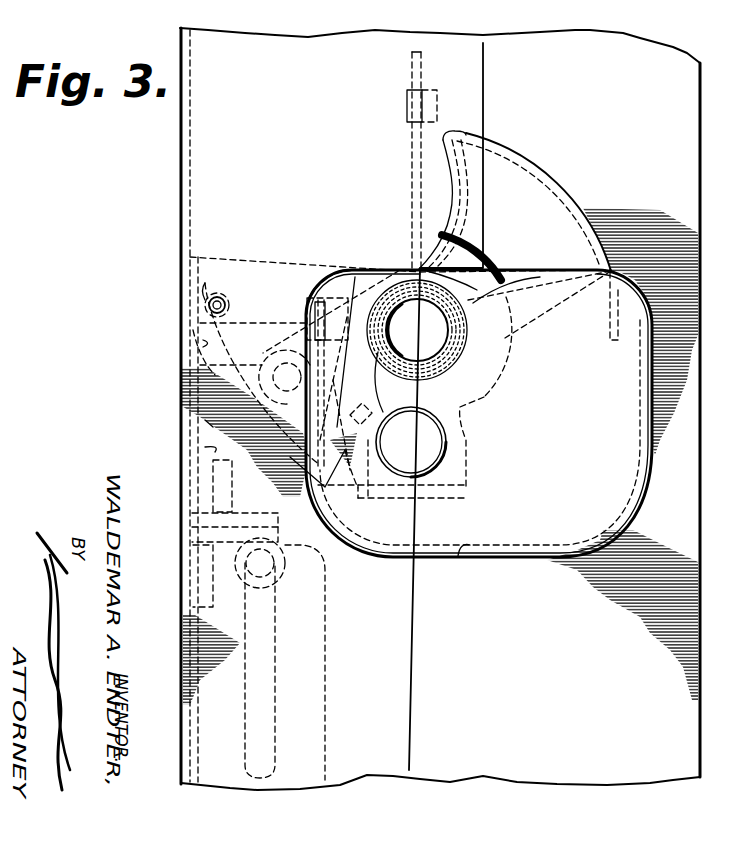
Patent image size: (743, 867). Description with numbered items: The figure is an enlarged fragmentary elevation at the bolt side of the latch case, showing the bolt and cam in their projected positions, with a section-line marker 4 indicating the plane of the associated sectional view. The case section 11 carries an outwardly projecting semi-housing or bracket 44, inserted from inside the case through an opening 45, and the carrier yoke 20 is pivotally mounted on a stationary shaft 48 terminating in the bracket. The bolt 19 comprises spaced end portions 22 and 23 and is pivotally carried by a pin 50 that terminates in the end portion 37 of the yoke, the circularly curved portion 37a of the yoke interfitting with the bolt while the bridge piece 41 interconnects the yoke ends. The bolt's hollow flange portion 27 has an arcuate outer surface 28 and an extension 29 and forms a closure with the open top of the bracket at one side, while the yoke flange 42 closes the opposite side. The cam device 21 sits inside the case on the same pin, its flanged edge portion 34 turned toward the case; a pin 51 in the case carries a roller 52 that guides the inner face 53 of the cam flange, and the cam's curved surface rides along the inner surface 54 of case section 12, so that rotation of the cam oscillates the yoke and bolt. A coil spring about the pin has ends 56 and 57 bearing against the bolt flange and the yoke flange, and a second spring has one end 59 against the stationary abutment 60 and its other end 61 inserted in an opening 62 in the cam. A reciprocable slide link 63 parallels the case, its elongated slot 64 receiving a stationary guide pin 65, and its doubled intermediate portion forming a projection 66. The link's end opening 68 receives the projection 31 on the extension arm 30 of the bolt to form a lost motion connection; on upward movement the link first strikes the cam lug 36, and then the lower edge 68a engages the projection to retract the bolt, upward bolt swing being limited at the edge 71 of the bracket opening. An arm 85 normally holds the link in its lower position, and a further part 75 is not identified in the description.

The case section 11 is at (694, 162).
The case section 12 is at (184, 128).
The section line 4- 4 is at (492, 62).
The bolt 19 is at (537, 151).
The carrier yoke 20 is at (476, 443).
The cam device 21 is at (236, 250).
The end portion of bolt 22 is at (540, 314).
The end portion of bolt 23 is at (566, 230).
The hollow flange portion 27 is at (548, 177).
The outer surface of flange 28 is at (578, 212).
The extension of flange 29 is at (609, 342).
The extension arm 30 is at (288, 340).
The projection 31 is at (280, 365).
The flanged edge portion of cam 34 is at (200, 368).
The cam lug 36 is at (356, 401).
The end portion of yoke 37 is at (462, 390).
The circularly curved portion 37a is at (490, 376).
The bridge piece of yoke 41 is at (446, 489).
The yoke flange 42 is at (353, 275).
The bracket 44 is at (542, 523).
The opening 45 is at (458, 556).
The stationary shaft 48 is at (433, 455).
The pin 50 is at (437, 340).
The pin 51 is at (208, 308).
The roller 52 is at (212, 290).
The inner face of cam flange 53 is at (203, 345).
The inner surface of case section 54 is at (197, 203).
The spring end 56 is at (496, 160).
The spring end 57 is at (310, 457).
The spring end 59 is at (410, 147).
The stationary abutment 60 is at (438, 97).
The spring end 61 is at (315, 287).
The opening in cam 62 is at (293, 287).
The slide link 63 is at (326, 693).
The elongated slot 64 is at (268, 637).
The guide pin 65 is at (282, 575).
The projection 66 is at (192, 514).
The opening 68 is at (205, 425).
The lower edge of slot 68a is at (207, 447).
The edge of bracket opening 71 is at (410, 268).
The block 75 is at (200, 570).
The arm 85 is at (213, 487).